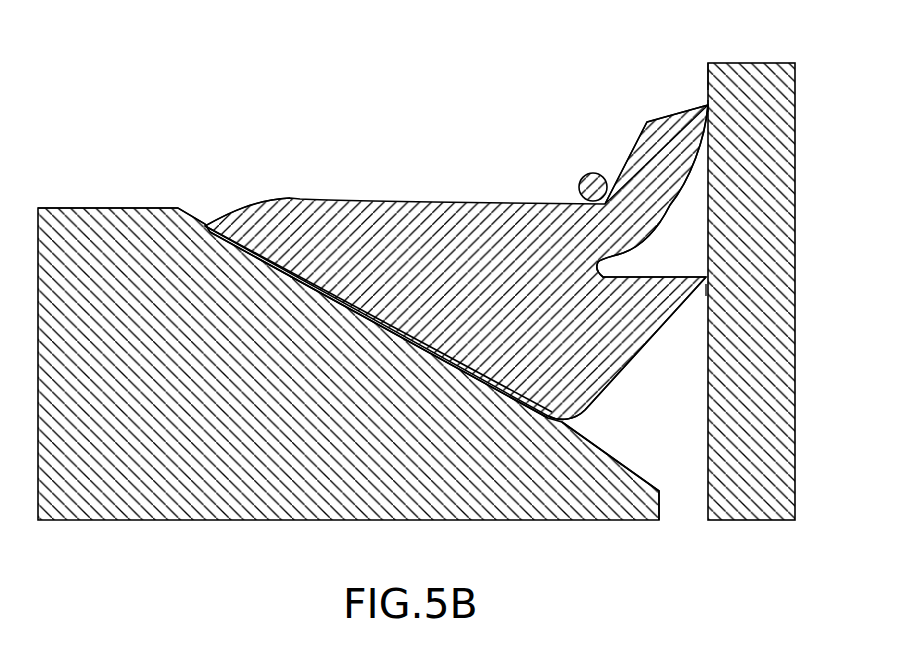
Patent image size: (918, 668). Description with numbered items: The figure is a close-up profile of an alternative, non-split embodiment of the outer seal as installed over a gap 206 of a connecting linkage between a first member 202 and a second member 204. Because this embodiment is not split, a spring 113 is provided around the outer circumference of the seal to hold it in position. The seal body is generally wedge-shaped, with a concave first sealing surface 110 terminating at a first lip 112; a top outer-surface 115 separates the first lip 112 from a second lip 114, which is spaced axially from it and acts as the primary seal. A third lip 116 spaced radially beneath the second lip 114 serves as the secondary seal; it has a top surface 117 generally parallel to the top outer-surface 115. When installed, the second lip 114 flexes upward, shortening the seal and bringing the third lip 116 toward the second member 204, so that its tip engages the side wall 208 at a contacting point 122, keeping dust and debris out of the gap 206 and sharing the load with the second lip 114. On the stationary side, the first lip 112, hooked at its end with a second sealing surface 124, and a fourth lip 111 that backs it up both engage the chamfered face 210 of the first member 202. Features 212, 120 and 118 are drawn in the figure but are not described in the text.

The first member 202 is at (182, 395).
The second member 204 is at (778, 92).
The top outer-surface 115 is at (438, 202).
The top surface of base component 212 is at (108, 208).
The second sealing surface 124 is at (203, 228).
The first lip 112 is at (280, 218).
The first sealing surface 110 is at (397, 323).
The chamfered face 210 is at (413, 348).
The spring 113 is at (584, 175).
The second lip 114 is at (645, 140).
The side wall 208 is at (706, 78).
The contacting point 122 is at (708, 105).
The fusion curve 120 is at (652, 234).
The gap region 118 is at (685, 247).
The top surface 117 is at (668, 262).
The third lip 116 is at (673, 283).
The fourth lip 111 is at (548, 414).
The gap 206 is at (642, 454).